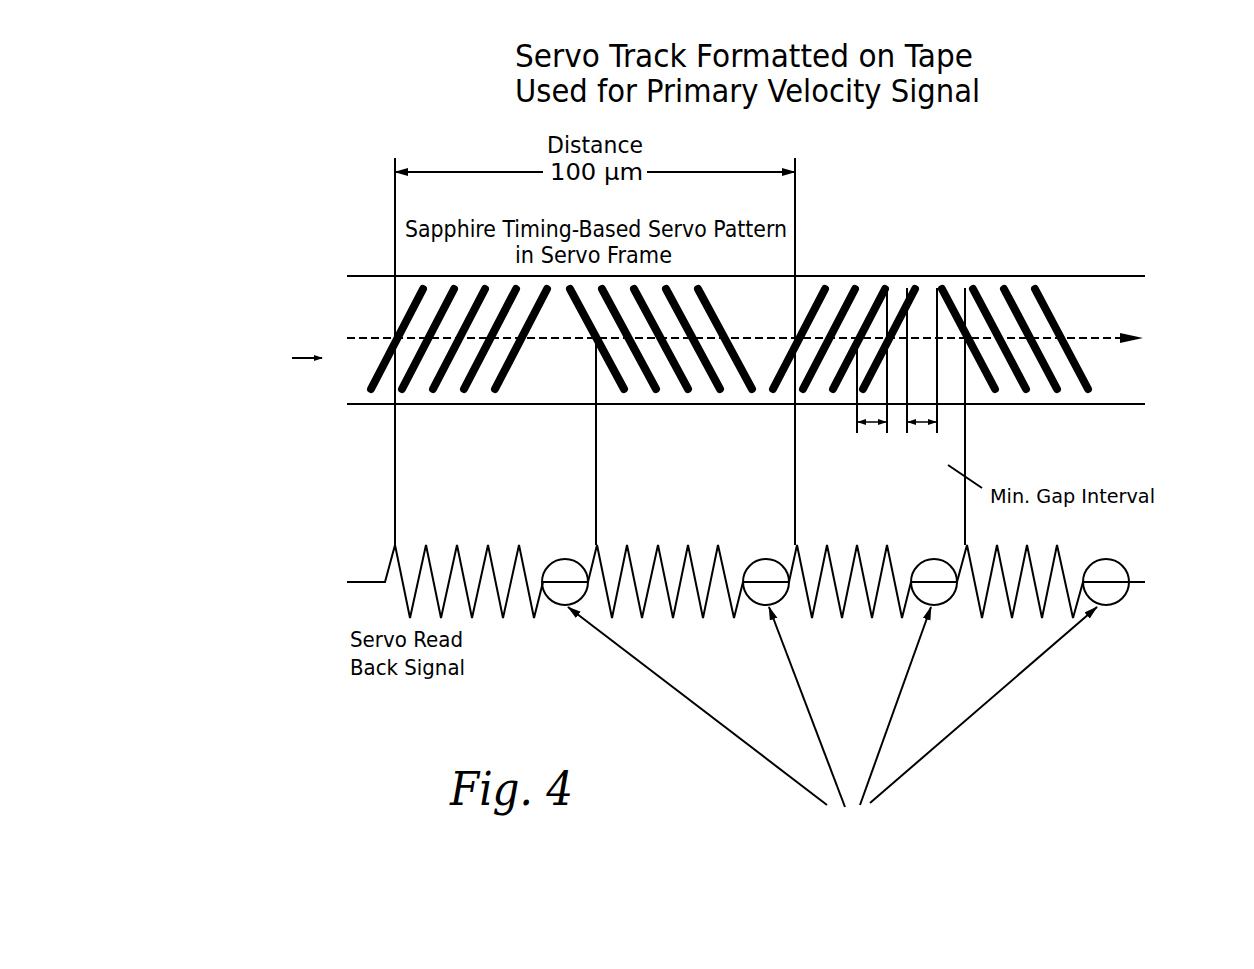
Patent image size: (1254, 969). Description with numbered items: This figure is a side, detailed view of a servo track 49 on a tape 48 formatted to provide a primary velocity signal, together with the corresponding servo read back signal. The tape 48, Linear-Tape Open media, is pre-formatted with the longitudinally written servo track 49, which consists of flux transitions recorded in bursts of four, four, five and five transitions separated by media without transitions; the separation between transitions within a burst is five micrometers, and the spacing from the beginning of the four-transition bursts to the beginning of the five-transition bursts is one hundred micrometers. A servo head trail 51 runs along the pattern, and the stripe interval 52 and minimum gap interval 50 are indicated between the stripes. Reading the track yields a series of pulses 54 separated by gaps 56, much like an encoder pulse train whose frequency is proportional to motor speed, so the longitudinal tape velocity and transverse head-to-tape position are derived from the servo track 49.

The tape 48 is at (1070, 229).
The servo track 49 is at (1120, 388).
The minimum gap interval (MGINT) 50 is at (933, 465).
The servo head trail 51 is at (272, 293).
The stripe interval (SINT) 52 is at (813, 453).
The series of pulses 54 is at (1140, 540).
The gaps 56 is at (863, 838).